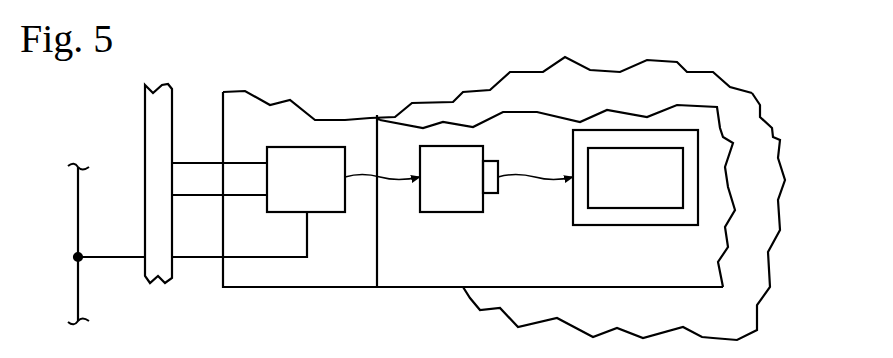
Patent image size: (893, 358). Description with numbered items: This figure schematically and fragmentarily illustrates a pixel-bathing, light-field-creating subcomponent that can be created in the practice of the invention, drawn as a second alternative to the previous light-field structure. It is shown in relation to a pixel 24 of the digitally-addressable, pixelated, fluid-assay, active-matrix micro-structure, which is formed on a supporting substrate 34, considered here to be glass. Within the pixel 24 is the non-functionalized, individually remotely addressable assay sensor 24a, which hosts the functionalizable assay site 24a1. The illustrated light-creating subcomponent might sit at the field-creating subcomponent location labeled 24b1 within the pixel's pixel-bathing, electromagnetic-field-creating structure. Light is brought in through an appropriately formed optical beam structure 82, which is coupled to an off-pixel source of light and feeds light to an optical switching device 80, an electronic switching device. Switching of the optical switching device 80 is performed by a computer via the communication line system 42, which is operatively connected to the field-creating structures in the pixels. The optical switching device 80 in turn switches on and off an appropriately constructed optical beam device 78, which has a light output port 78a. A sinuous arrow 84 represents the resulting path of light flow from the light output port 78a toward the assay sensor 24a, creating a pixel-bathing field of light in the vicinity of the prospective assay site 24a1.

The pixel 24 is at (467, 122).
The assay sensor 24a is at (702, 137).
The functionalizable assay site 24a1 is at (683, 168).
The field-creating subcomponent 24b1 is at (360, 264).
The substrate 34 is at (555, 75).
The line system 42 is at (92, 258).
The optical beam device 78 is at (441, 214).
The light output port 78a is at (490, 188).
The optical switching device 80 is at (312, 160).
The optical beam structure 82 is at (213, 164).
The sinuous arrow 84 is at (527, 175).